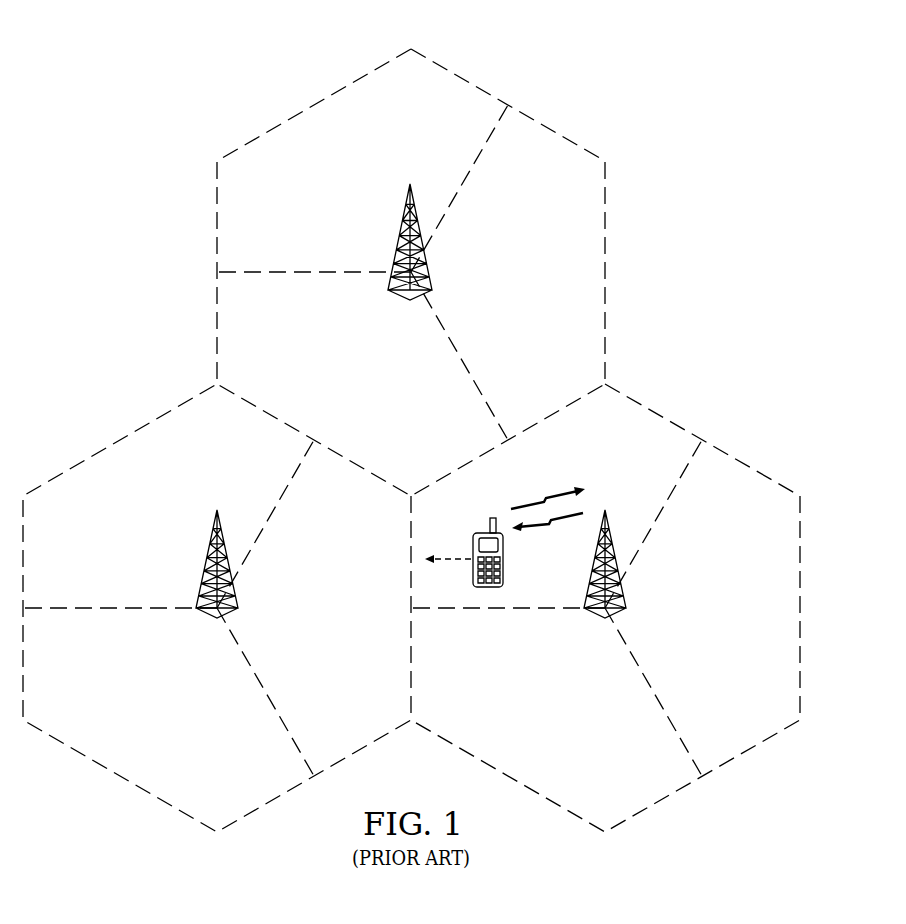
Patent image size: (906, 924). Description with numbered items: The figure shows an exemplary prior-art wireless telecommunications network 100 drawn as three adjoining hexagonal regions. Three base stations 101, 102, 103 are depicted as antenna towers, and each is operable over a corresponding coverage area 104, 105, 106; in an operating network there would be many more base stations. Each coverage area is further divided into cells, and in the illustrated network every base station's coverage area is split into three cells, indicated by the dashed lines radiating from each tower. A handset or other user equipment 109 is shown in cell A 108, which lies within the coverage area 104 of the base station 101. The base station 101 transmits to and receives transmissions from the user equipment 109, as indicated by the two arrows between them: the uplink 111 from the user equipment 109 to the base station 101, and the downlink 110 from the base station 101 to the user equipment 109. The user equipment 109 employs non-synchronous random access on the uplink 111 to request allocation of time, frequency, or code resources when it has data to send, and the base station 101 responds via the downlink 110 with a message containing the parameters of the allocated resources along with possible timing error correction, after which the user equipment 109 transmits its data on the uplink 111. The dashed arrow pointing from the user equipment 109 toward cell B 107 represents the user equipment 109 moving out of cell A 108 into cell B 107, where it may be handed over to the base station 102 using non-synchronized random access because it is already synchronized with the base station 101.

The wireless telecommunications network 100 is at (411, 424).
The base station 101 is at (628, 596).
The base station 102 is at (205, 560).
The base station 103 is at (396, 236).
The coverage area 104 is at (670, 792).
The coverage area 105 is at (128, 778).
The coverage area 106 is at (541, 122).
The cell B 107 is at (350, 637).
The cell A 108 is at (624, 471).
The user equipment 109 is at (478, 533).
The downlink 110 is at (548, 520).
The uplink 111 is at (545, 500).